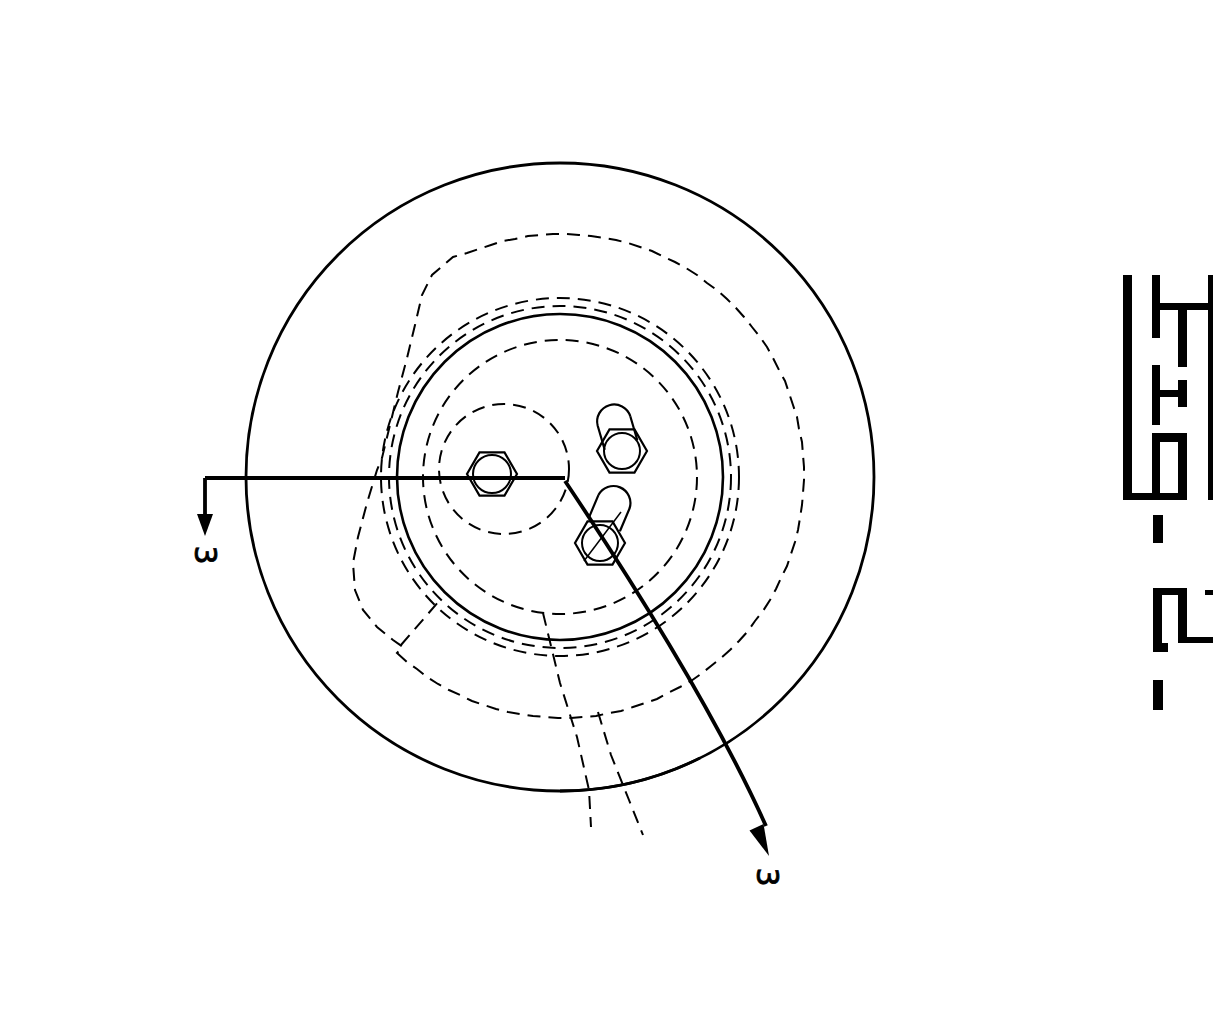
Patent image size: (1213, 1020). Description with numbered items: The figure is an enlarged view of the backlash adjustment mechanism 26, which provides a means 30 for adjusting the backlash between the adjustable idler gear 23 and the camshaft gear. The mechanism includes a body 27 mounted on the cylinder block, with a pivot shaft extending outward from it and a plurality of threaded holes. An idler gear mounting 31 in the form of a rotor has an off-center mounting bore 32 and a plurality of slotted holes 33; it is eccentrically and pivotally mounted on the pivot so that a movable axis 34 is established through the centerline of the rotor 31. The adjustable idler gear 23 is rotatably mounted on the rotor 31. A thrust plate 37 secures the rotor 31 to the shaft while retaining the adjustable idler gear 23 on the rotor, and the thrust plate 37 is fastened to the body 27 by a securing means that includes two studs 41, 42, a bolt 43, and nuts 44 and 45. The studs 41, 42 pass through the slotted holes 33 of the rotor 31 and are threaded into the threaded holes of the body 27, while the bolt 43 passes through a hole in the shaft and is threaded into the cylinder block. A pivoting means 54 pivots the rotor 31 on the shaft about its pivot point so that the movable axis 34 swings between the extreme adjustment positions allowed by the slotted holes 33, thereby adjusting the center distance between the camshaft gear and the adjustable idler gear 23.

The adjustable idler gear 23 is at (685, 768).
The backlash adjustment mechanism 26 is at (479, 164).
The body 27 is at (630, 799).
The means for adjusting the backlash 30 is at (581, 314).
The idler gear mounting 31 is at (578, 741).
The off-center mounting bore 32 is at (401, 645).
The slotted holes 33 is at (622, 453).
The movable axis 34 is at (562, 475).
The thrust plate 37 is at (497, 613).
The stud 41 is at (643, 443).
The stud 42 is at (628, 530).
The bolt 43 is at (486, 462).
The nut 44 is at (637, 433).
The nut 45 is at (627, 541).
The means for pivoting the rotor 54 is at (632, 518).